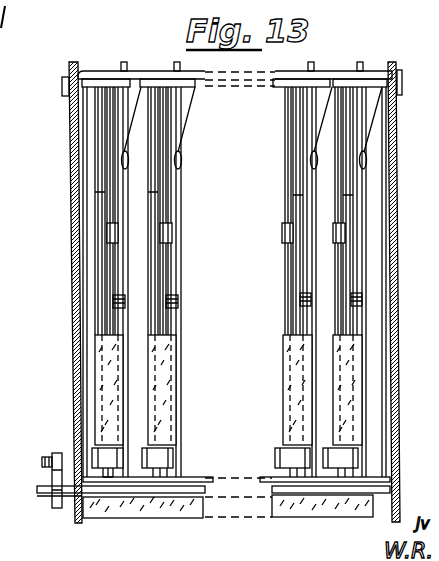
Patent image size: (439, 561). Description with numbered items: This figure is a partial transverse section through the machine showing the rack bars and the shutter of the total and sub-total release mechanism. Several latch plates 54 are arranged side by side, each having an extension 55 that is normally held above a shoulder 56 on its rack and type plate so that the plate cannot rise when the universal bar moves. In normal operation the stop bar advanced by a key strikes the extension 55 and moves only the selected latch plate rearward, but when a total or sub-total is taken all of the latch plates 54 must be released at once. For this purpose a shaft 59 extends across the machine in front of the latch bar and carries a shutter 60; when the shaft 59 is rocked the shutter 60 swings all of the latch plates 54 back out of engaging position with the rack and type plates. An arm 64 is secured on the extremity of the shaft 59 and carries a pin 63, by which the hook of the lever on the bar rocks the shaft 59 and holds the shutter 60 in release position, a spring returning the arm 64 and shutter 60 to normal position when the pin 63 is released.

The latch plate 54 is at (125, 262).
The extension 55 is at (120, 375).
The shoulder 56 is at (277, 452).
The shaft 59 is at (148, 489).
The shutter 60 is at (353, 507).
The pin 63 is at (45, 460).
The arm 64 is at (52, 474).